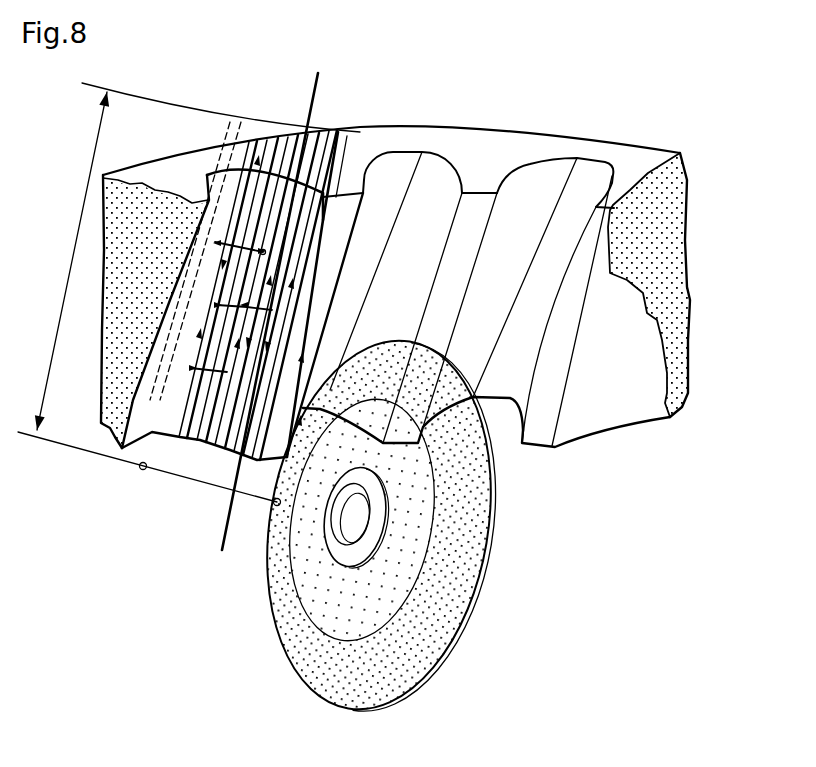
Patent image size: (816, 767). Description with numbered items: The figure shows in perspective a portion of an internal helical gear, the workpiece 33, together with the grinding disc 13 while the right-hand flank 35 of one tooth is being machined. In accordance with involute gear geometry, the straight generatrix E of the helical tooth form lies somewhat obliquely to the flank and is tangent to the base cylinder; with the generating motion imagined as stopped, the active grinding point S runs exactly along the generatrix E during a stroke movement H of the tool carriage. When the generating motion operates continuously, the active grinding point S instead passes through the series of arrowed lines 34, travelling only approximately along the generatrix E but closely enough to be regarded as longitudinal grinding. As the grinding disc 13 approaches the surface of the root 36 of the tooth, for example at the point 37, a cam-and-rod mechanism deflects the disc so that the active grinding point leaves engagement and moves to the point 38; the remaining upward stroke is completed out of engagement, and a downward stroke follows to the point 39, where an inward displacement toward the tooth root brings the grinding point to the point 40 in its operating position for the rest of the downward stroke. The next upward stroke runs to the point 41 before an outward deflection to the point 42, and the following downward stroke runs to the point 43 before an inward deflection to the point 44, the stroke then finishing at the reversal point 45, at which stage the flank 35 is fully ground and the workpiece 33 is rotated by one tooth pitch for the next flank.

The grinding disc 13 is at (490, 527).
The workpiece 33 is at (466, 145).
The arrowed lines 34 is at (297, 357).
The right-hand flank 35 is at (325, 178).
The root of the tooth 36 is at (225, 130).
The point 37 is at (215, 242).
The point 38 is at (263, 252).
The point 39 is at (272, 310).
The point 40 is at (217, 305).
The point 41 is at (190, 368).
The point 42 is at (210, 455).
The point 43 is at (187, 445).
The point 44 is at (105, 445).
The reversal point 45 is at (143, 469).
The straight generatrix E is at (310, 100).
The active grinding point S is at (274, 508).
The stroke movement H is at (187, 292).